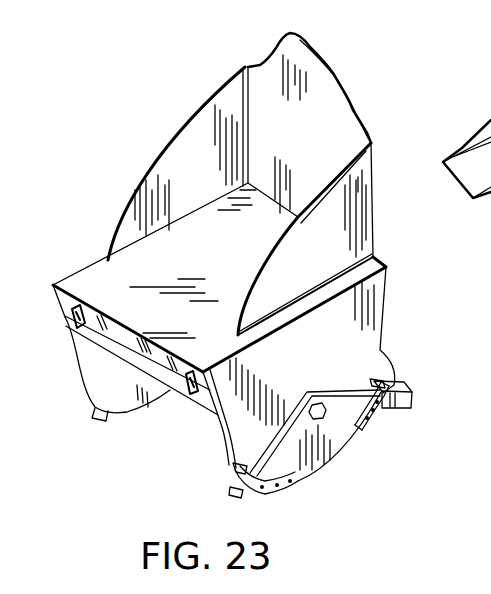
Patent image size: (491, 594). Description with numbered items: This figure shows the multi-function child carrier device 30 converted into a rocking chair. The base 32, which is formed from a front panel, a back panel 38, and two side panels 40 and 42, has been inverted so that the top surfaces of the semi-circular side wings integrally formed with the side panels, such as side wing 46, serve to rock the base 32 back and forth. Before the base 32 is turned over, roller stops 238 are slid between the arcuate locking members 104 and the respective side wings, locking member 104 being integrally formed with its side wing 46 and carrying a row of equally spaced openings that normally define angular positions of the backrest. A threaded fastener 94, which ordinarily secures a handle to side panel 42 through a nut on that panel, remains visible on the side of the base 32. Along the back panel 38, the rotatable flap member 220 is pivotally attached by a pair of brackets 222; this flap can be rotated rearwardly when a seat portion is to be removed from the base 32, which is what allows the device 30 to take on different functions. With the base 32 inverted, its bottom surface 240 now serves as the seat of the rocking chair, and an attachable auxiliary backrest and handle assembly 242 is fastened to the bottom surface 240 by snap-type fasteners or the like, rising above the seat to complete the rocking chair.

The multi-function child carrier device 30 is at (146, 58).
The base 32 is at (88, 240).
The back panel 38 is at (117, 328).
The side panel 40 is at (130, 399).
The side panel 42 is at (295, 378).
The side wing 46 is at (262, 454).
The threaded fastener 94 is at (323, 418).
The arcuate locking member 104 is at (283, 487).
The rotatable flap member 220 is at (173, 395).
The bracket 222 is at (72, 318).
The roller stop 238 is at (413, 395).
The bottom surface 240 is at (245, 253).
The auxiliary backrest and handle assembly 242 is at (348, 87).